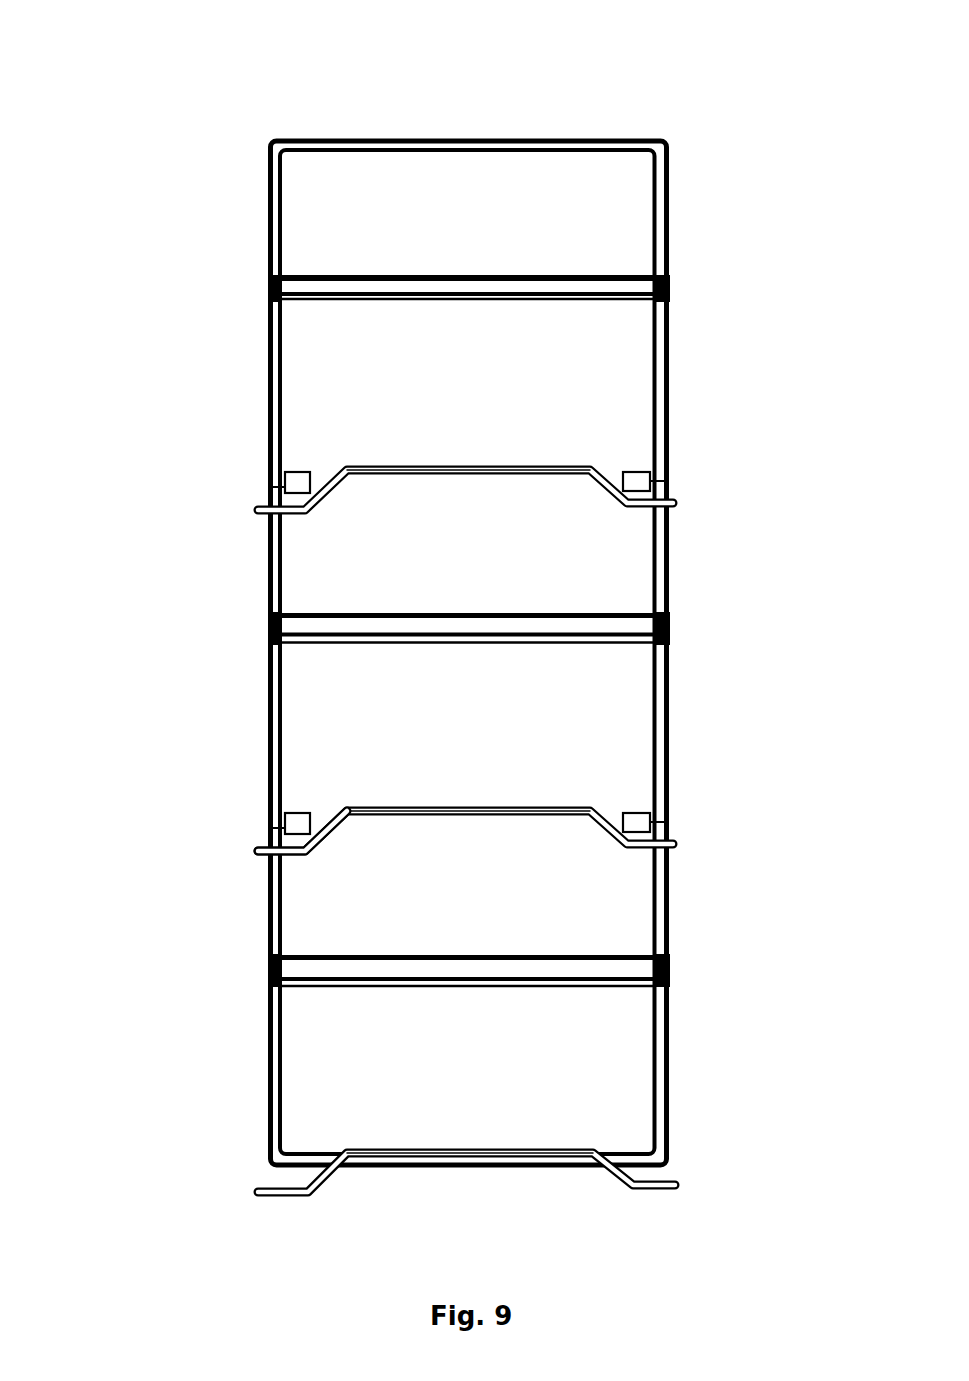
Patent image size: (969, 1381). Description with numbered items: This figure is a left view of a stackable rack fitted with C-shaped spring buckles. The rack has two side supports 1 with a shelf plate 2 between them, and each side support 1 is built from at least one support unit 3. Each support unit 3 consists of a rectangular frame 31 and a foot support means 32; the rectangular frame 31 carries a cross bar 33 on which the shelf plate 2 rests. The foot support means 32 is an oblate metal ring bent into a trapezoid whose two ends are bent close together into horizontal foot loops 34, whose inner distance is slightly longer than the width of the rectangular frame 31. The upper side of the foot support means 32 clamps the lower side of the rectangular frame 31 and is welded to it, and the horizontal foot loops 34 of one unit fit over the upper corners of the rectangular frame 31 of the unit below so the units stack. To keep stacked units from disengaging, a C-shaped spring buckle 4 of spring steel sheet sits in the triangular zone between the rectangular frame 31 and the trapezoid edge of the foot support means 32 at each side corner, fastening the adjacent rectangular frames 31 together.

The side support 1 is at (668, 193).
The shelf plate 2 is at (348, 287).
The support unit 3 is at (668, 1063).
The rectangular frame 31 is at (672, 360).
The foot support means 32 is at (586, 803).
The cross bar 33 is at (337, 305).
The horizontal foot loop 34 is at (263, 857).
The C-shaped spring buckle 4 is at (670, 465).